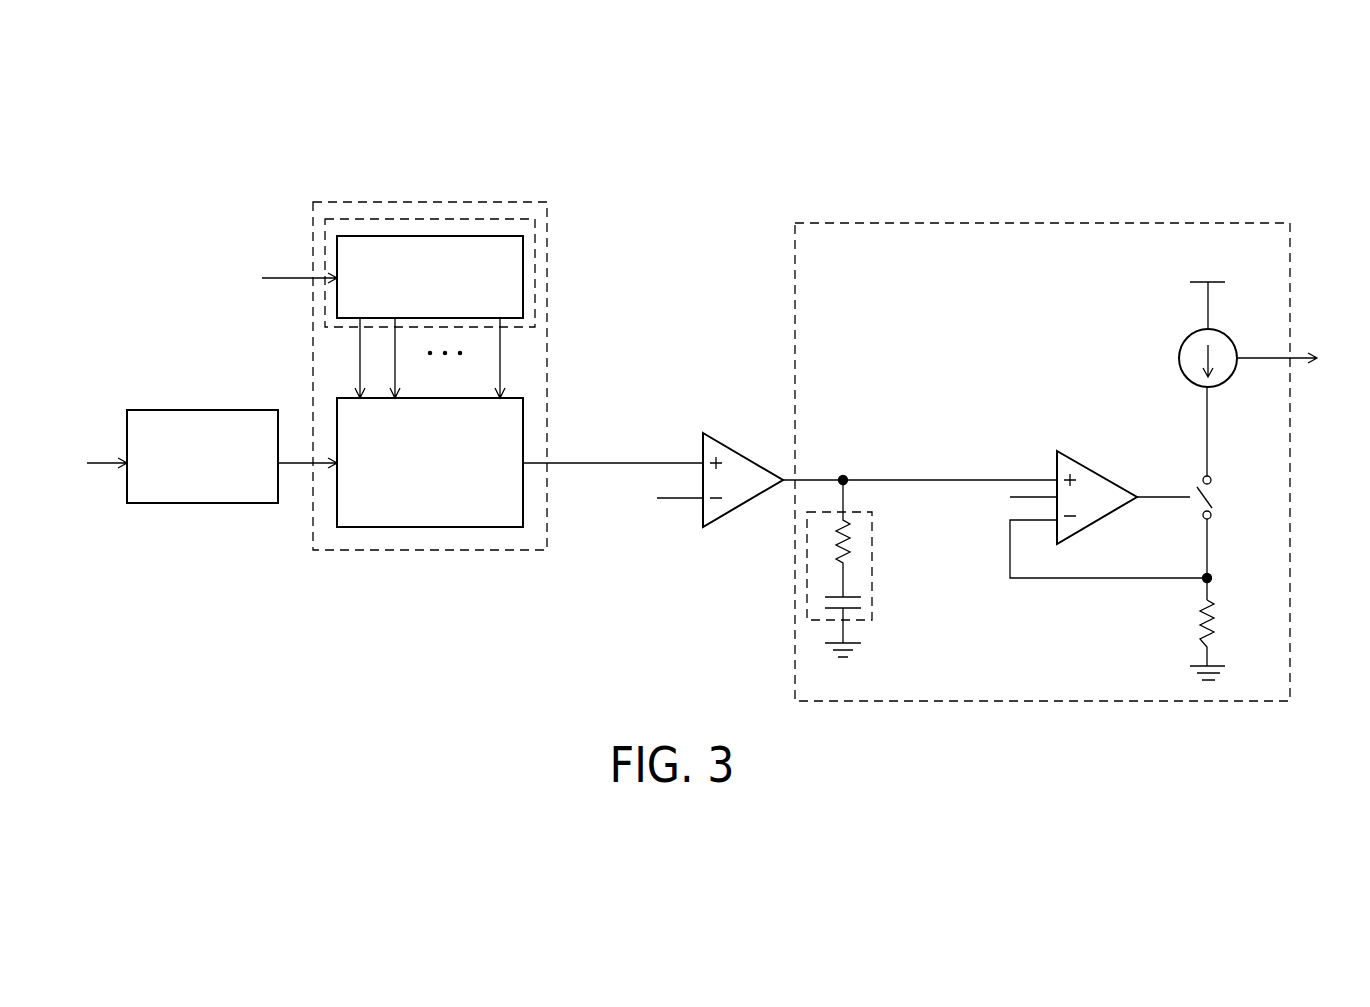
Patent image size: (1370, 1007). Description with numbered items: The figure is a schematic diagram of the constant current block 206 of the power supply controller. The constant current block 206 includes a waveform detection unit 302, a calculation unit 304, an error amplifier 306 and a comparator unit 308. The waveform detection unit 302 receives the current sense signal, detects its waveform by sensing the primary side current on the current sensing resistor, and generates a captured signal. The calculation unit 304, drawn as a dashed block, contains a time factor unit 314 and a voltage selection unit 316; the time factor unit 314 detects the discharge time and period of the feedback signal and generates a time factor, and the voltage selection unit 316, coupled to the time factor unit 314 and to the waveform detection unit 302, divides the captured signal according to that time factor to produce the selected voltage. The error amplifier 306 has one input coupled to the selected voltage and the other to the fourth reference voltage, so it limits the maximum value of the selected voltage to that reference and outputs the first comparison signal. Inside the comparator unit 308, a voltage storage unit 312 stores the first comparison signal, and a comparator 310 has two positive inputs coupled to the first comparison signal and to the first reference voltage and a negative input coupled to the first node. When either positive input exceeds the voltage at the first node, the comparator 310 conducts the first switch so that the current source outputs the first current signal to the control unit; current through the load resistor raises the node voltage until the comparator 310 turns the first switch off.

The constant current block 206 is at (1222, 125).
The waveform detection unit 302 is at (200, 503).
The calculation unit 304 is at (455, 550).
The error amplifier 306 is at (737, 448).
The comparator unit 308 is at (1022, 223).
The comparator 310 is at (1083, 460).
The voltage storage unit 312 is at (872, 565).
The time factor unit 314 is at (523, 268).
The voltage selection unit 316 is at (388, 527).